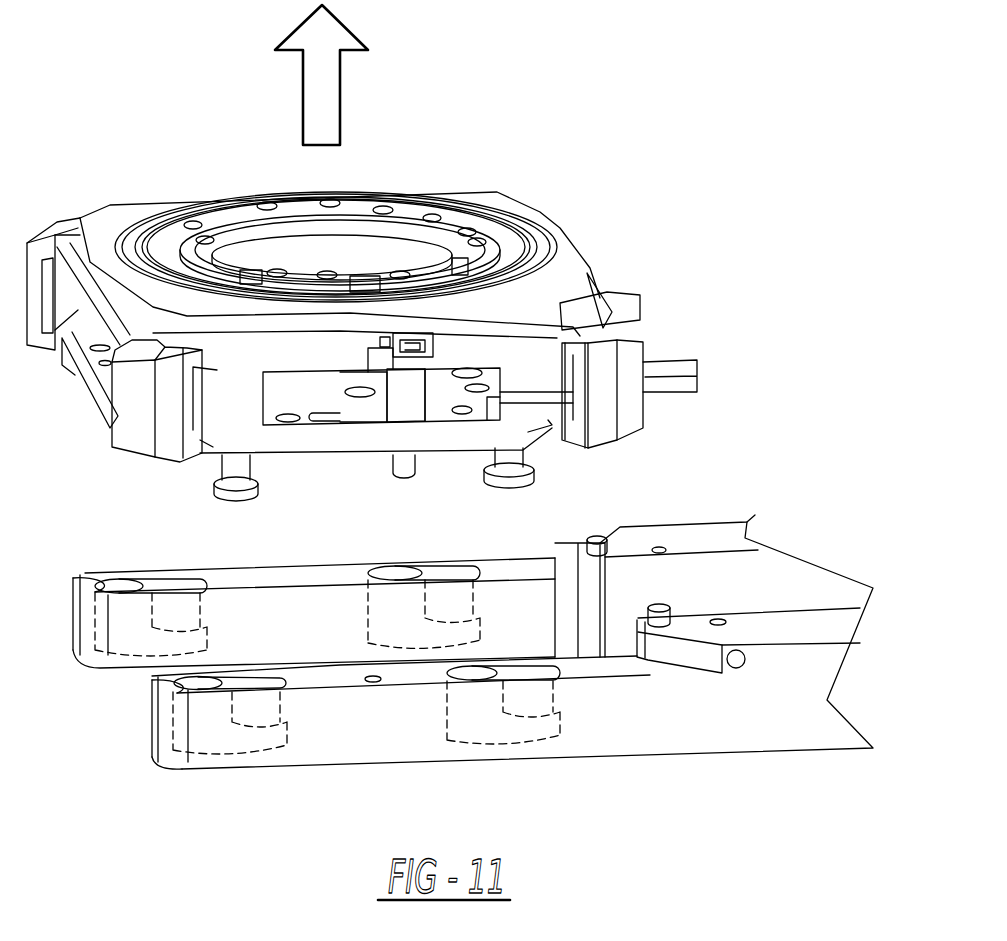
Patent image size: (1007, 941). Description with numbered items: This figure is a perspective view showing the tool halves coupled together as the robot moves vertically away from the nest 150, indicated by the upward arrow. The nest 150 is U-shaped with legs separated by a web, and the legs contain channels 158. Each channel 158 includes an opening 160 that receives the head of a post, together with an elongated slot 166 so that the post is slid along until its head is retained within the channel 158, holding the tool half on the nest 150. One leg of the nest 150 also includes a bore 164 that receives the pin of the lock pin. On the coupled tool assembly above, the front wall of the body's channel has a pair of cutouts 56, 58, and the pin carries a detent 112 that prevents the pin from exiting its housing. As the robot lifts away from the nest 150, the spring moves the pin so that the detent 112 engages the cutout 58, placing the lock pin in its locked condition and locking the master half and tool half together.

The detent 112 is at (412, 352).
The cutout 56 is at (350, 360).
The cutout 58 is at (393, 350).
The nest 150 is at (711, 762).
The channel 158 is at (131, 665).
The opening 160 is at (120, 572).
The bore 164 is at (373, 682).
The slot 166 is at (197, 607).